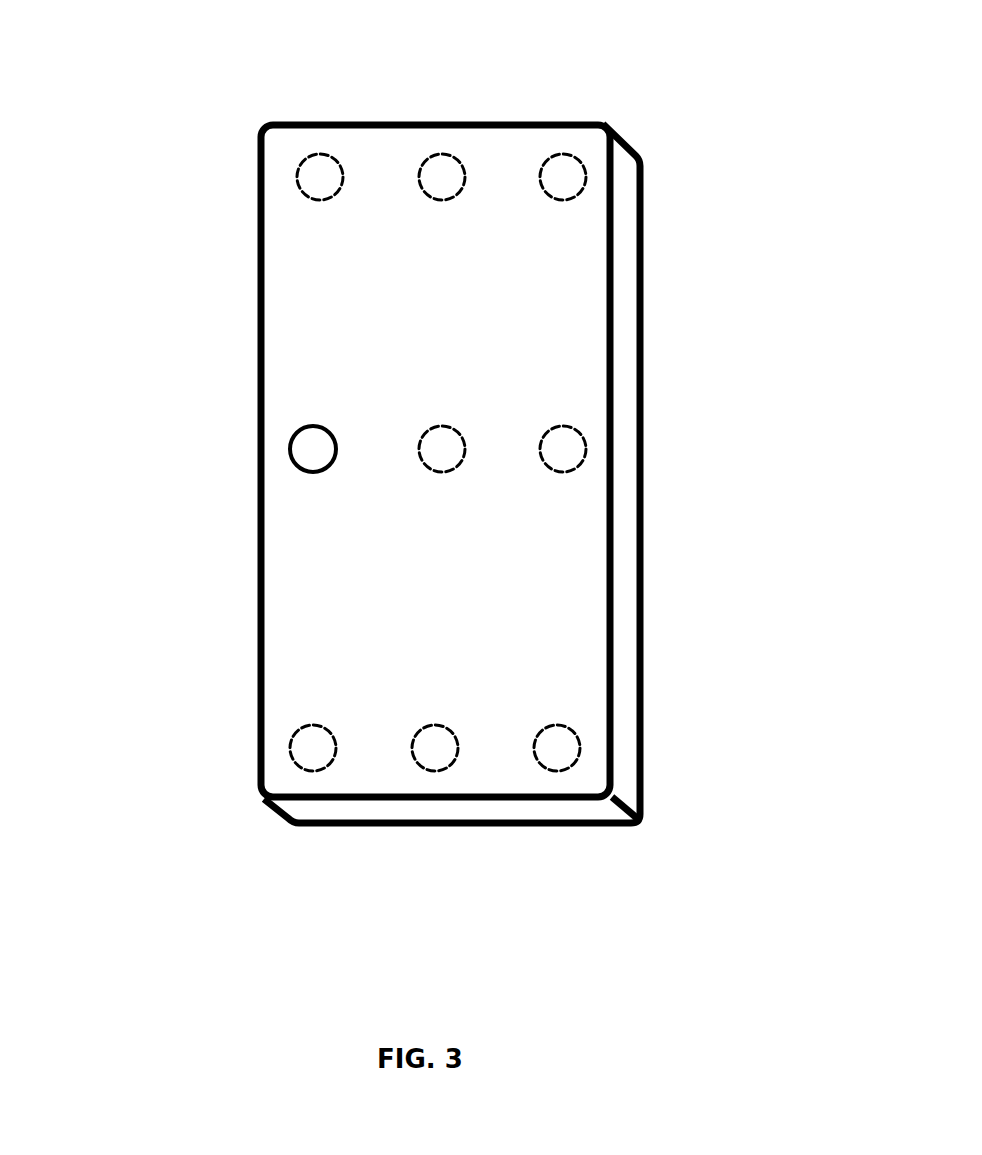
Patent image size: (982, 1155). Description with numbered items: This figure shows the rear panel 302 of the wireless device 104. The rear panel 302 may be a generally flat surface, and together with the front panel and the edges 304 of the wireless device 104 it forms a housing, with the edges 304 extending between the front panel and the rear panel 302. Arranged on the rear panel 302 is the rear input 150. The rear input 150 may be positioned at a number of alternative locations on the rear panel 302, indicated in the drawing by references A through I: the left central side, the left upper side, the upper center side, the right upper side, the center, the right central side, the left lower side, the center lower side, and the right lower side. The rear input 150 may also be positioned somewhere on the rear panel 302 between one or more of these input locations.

The wireless device 104 is at (446, 444).
The rear input 150 is at (290, 147).
The rear panel 302 is at (594, 311).
The edges 304 is at (620, 513).